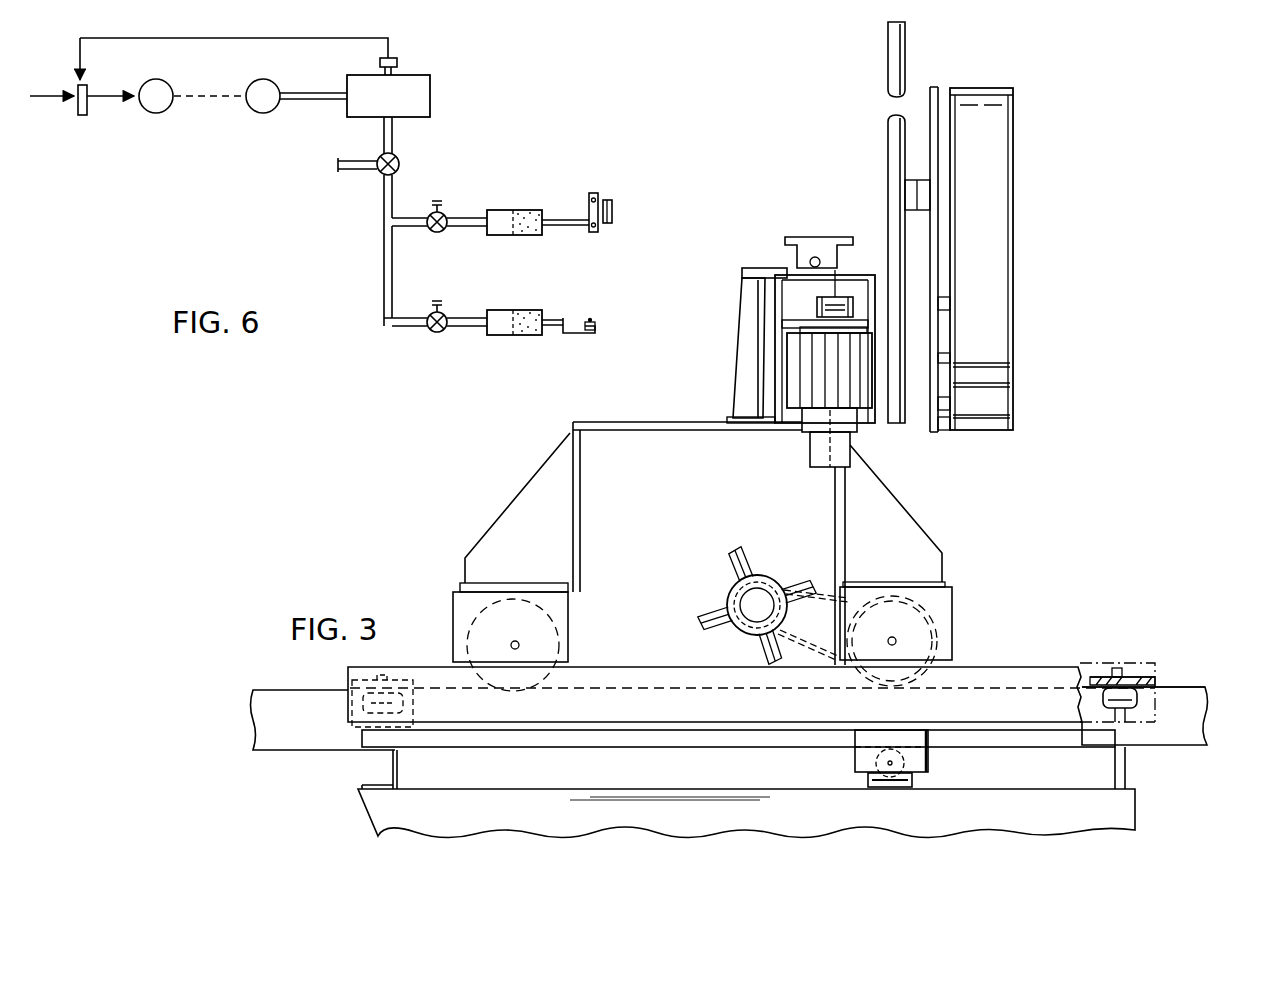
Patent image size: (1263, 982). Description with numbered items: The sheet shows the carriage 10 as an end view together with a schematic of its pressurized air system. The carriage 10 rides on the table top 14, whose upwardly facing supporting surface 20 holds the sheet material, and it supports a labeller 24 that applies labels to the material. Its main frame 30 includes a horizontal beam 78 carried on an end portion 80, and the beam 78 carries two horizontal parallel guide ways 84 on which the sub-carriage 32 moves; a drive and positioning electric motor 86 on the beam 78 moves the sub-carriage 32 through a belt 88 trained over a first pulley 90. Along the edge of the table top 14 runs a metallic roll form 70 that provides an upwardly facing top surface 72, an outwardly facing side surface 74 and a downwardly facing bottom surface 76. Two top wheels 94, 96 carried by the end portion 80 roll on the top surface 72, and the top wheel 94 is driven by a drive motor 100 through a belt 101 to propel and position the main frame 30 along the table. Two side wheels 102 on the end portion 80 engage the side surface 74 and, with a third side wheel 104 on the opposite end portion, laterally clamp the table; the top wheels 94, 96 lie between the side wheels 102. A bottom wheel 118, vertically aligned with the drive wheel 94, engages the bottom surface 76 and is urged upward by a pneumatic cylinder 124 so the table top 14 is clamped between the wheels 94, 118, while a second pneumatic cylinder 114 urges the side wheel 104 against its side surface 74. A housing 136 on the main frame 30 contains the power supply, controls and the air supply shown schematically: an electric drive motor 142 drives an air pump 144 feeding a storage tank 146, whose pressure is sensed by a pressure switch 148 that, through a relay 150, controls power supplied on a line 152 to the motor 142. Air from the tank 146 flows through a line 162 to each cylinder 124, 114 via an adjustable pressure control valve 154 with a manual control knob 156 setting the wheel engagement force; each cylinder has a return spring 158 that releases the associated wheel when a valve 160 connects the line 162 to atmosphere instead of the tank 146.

In FIG. 3, the carriage 10 is at (690, 378).
In FIG. 3, the table top 14 is at (1195, 698).
In FIG. 3, the supporting surface 20 is at (1177, 685).
In FIG. 3, the labeller 24 is at (1022, 285).
In FIG. 3, the main frame 30 is at (744, 352).
In FIG. 3, the sub-carriage 32 is at (878, 238).
In FIG. 3, the roll form 70 is at (310, 694).
In FIG. 3, the top surface 72 is at (1165, 683).
In FIG. 3, the side surface 74 is at (1098, 730).
In FIG. 3, the bottom surface 76 is at (969, 749).
In FIG. 3, the horizontal beam 78 is at (782, 270).
In FIG. 3, the end portion 80 is at (916, 536).
In FIG. 3, the guide ways 84 is at (815, 256).
In FIG. 3, the electric motor 86 is at (812, 453).
In FIG. 3, the belt 88 is at (840, 295).
In FIG. 3, the first pulley 90 is at (822, 298).
In FIG. 3, the top wheel 94 is at (940, 622).
In FIG. 3, the top wheel 96 is at (550, 682).
In FIG. 3, the drive motor 100 is at (732, 582).
In FIG. 3, the belt 101 is at (826, 594).
In FIG. 3, the side wheels 102 is at (418, 700).
In FIG. 6, the side wheel 104 is at (598, 327).
In FIG. 6, the pneumatic cylinder 114 is at (512, 310).
In FIG. 6, the bottom wheel 118 is at (600, 194).
In FIG. 3, the bottom wheel 118 is at (918, 772).
In FIG. 6, the pneumatic cylinder 124 is at (512, 210).
In FIG. 3, the pneumatic cylinder 124 is at (912, 783).
In FIG. 3, the housing 136 is at (1128, 801).
In FIG. 6, the electric drive motor 142 is at (168, 88).
In FIG. 6, the air pump 144 is at (276, 88).
In FIG. 6, the storage tank 146 is at (430, 92).
In FIG. 6, the pressure switch 148 is at (396, 62).
In FIG. 6, the relay 150 is at (88, 94).
In FIG. 6, the line 152 is at (62, 96).
In FIG. 6, the pressure control valve 154 is at (437, 233).
In FIG. 6, the control knob 156 is at (437, 202).
In FIG. 6, the return spring 158 is at (530, 236).
In FIG. 6, the valve 160 is at (398, 162).
In FIG. 6, the line 162 is at (383, 197).